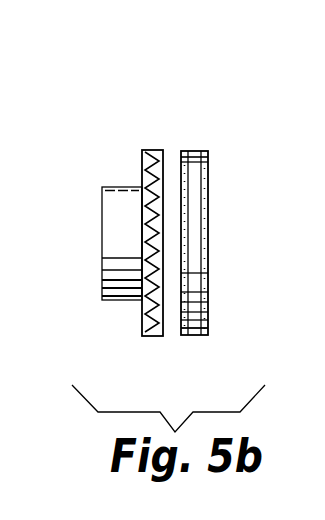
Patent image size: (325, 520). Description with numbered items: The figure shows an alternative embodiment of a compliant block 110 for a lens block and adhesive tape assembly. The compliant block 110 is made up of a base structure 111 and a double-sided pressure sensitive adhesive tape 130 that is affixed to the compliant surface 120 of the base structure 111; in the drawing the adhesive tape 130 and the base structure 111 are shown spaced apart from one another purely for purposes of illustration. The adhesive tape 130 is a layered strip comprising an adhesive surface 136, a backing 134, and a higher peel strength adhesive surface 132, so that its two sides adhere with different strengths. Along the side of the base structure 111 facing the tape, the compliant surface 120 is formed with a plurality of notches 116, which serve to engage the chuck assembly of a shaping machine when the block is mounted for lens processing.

The compliant block 110 is at (200, 68).
The base structure 111 is at (122, 185).
The notches 116 is at (146, 300).
The compliant surface 120 is at (165, 150).
The double-sided pressure sensitive adhesive tape 130 is at (207, 193).
The higher peel strength adhesive surface 132 is at (185, 336).
The backing 134 is at (195, 335).
The adhesive surface 136 is at (198, 151).